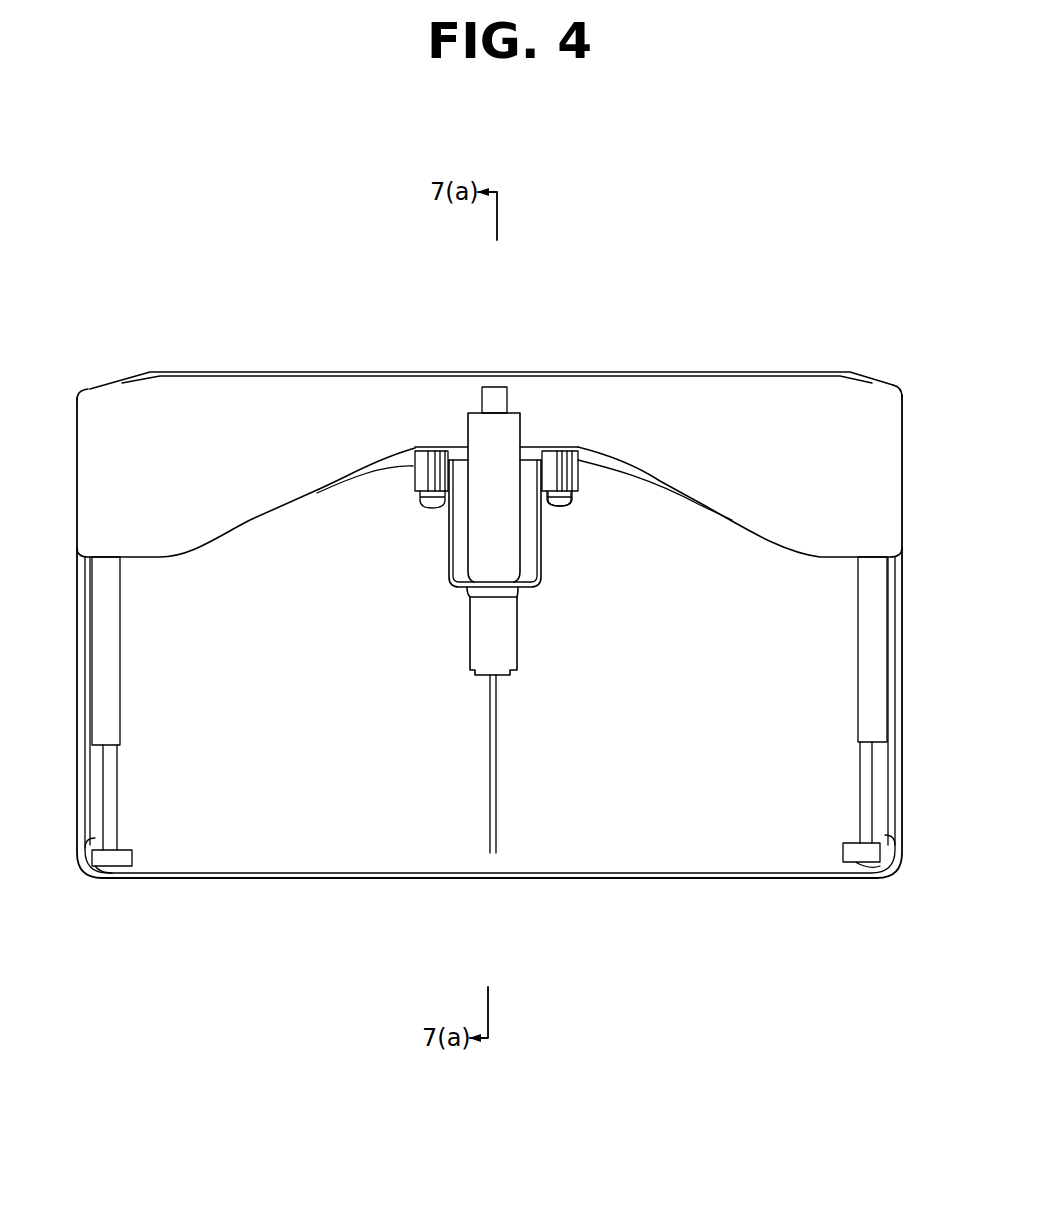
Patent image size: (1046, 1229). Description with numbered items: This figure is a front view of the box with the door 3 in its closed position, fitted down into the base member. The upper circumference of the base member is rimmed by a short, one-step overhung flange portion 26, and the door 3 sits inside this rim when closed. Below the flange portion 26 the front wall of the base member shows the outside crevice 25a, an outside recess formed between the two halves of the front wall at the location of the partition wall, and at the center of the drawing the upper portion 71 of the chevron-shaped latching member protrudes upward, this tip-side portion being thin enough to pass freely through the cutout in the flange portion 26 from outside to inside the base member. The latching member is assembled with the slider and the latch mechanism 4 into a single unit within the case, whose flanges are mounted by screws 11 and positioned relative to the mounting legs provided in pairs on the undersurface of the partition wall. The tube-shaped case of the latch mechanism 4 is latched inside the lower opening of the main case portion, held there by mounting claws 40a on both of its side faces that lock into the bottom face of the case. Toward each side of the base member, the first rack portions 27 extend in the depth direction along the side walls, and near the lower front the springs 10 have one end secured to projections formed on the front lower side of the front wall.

The door 3 is at (683, 372).
The spring 10 is at (877, 835).
The flange portion 26 is at (252, 417).
The screw 11 is at (560, 507).
The mounting claw 40a is at (523, 595).
The upper portion 71 is at (496, 387).
The latch mechanism 4 is at (526, 656).
The crevice 25a is at (496, 800).
The first rack portion 27 is at (873, 702).